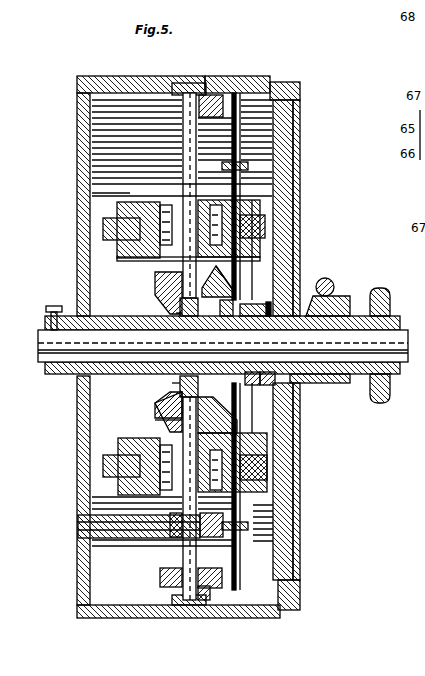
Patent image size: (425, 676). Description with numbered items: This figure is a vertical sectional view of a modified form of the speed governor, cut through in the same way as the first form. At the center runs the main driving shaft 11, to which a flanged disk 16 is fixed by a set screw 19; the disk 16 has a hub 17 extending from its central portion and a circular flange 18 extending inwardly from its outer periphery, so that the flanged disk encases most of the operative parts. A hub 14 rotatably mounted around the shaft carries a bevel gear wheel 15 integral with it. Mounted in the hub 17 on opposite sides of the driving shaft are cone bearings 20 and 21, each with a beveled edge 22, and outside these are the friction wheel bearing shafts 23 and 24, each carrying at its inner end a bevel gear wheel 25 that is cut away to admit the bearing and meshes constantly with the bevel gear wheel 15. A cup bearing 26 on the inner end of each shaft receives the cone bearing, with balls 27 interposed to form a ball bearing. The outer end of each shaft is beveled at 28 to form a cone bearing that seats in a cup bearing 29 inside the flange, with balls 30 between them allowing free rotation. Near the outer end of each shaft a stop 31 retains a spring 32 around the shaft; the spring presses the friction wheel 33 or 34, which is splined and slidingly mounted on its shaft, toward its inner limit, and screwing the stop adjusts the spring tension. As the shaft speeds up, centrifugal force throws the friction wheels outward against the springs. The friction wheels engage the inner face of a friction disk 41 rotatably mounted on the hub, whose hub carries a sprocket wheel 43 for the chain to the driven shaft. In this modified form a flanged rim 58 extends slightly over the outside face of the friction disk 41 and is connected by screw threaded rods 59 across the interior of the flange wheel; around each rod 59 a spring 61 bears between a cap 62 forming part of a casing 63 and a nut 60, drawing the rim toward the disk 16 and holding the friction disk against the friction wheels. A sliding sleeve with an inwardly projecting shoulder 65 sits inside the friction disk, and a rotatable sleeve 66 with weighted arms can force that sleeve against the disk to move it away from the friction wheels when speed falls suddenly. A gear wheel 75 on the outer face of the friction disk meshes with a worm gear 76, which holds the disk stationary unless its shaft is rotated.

The main driving shaft 11 is at (223, 346).
The hub 14 is at (356, 316).
The bevel gear wheel 15 is at (230, 310).
The disk 16 is at (78, 577).
The hub 17 is at (125, 376).
The circular flange 18 is at (114, 605).
The set screw 19 is at (54, 306).
The cone bearing 20 is at (167, 347).
The cone bearing 21 is at (199, 347).
The beveled edge 22 is at (227, 278).
The friction wheel bearing shaft 23 is at (178, 262).
The friction wheel bearing shaft 24 is at (175, 428).
The bevel gear wheel 25 is at (160, 285).
The cup bearing 26 is at (205, 276).
The balls 27 is at (246, 408).
The beveled outer end 28 is at (210, 78).
The cup bearing 29 is at (190, 78).
The balls 30 is at (173, 78).
The stop 31 is at (228, 78).
The spring 32 is at (200, 189).
The friction wheel 33 is at (262, 222).
The friction wheel 34 is at (268, 463).
The friction disk 41 is at (298, 490).
The sprocket wheel 43 is at (391, 400).
The flanged rim 58 is at (300, 590).
The screw threaded rod 59 is at (242, 168).
The nut 60 is at (78, 533).
The spring 61 is at (160, 541).
The cap 62 is at (212, 511).
The casing 63 is at (116, 520).
The inwardly projecting shoulder 65 is at (268, 372).
The sleeve 66 is at (251, 372).
The gear wheel 75 is at (330, 384).
The worm gear 76 is at (334, 284).